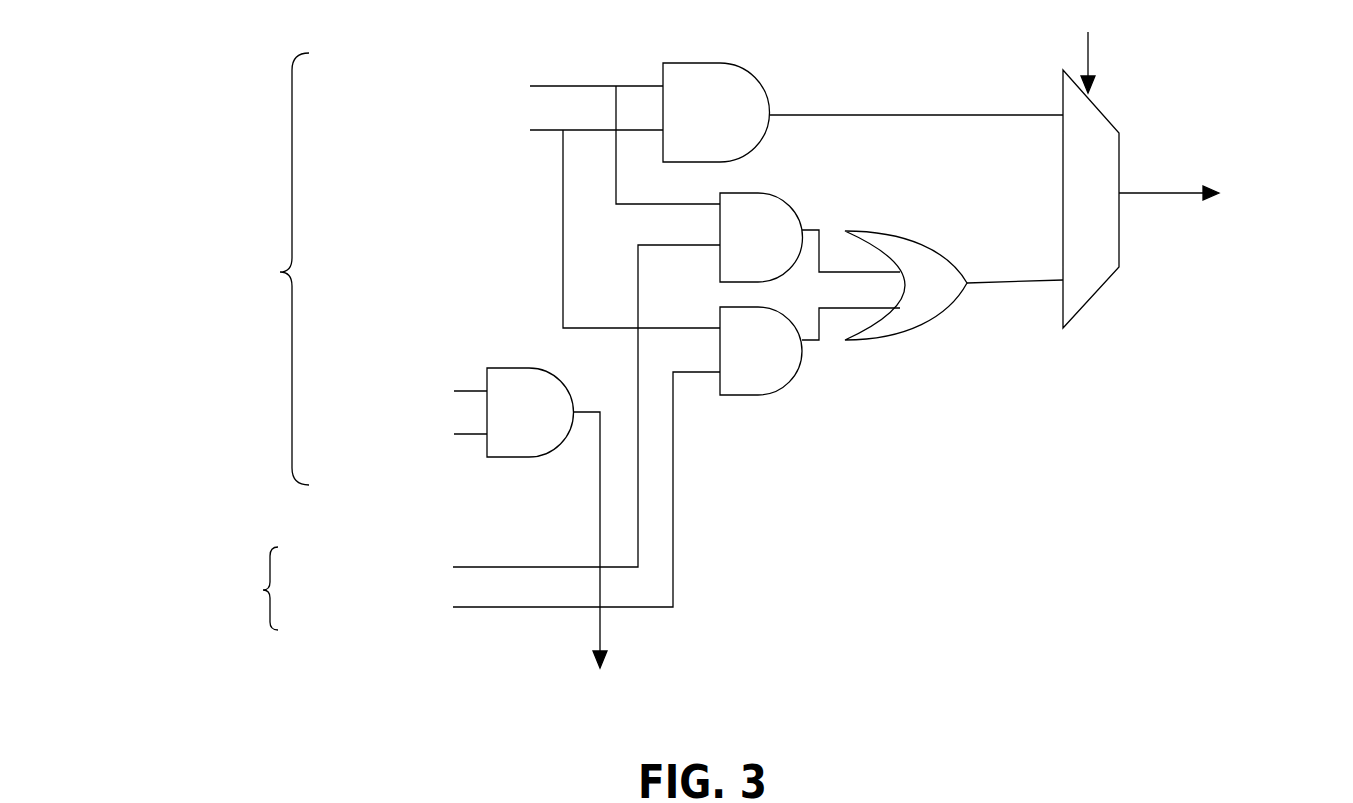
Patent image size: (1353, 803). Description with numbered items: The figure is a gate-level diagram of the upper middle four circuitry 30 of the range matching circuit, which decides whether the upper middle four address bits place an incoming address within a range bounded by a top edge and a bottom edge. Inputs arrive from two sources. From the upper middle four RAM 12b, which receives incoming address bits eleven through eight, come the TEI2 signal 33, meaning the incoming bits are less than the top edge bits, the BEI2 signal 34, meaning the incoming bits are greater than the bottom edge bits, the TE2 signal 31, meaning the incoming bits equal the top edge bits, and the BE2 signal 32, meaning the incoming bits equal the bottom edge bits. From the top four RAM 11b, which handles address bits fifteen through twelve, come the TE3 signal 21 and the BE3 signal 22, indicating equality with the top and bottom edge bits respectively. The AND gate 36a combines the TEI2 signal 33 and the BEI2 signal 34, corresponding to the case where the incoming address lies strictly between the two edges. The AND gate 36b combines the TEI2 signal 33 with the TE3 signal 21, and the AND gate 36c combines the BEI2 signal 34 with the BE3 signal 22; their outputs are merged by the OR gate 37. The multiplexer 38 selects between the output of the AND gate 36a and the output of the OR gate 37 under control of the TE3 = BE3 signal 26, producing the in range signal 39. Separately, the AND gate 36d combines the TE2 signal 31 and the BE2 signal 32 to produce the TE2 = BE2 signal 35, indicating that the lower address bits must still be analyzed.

The upper middle four RAM 12b is at (187, 269).
The top four RAM 11b is at (190, 588).
The TEI2 signal 33 is at (580, 139).
The BEI2 signal 34 is at (580, 222).
The TE2 signal 31 is at (399, 391).
The BE2 signal 32 is at (399, 434).
The TE3 signal 21 is at (502, 413).
The BE3 signal 22 is at (502, 496).
The AND gate 36a is at (863, 112).
The AND gate 36b is at (810, 237).
The AND gate 36c is at (810, 351).
The AND gate 36d is at (530, 412).
The OR gate 37 is at (954, 285).
The multiplexer 38 is at (1091, 199).
The TE3 = BE3 signal 26 is at (1111, 49).
The in range signal 39 is at (1235, 195).
The TE2 = BE2 signal 35 is at (619, 557).
The upper middle four circuitry 30 is at (1345, 567).